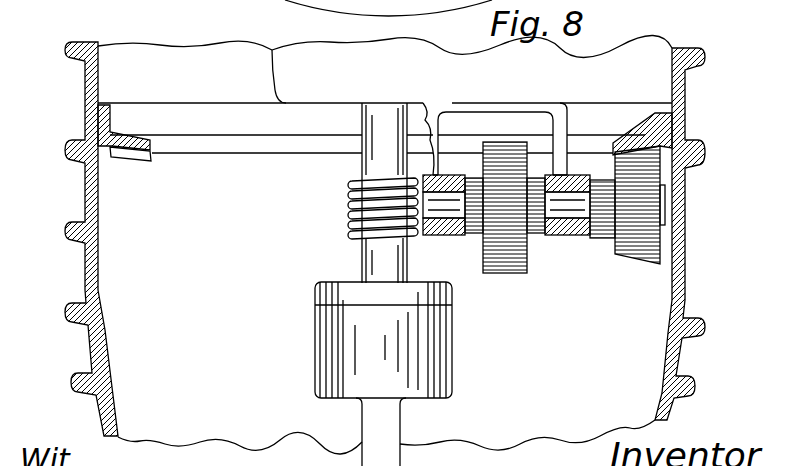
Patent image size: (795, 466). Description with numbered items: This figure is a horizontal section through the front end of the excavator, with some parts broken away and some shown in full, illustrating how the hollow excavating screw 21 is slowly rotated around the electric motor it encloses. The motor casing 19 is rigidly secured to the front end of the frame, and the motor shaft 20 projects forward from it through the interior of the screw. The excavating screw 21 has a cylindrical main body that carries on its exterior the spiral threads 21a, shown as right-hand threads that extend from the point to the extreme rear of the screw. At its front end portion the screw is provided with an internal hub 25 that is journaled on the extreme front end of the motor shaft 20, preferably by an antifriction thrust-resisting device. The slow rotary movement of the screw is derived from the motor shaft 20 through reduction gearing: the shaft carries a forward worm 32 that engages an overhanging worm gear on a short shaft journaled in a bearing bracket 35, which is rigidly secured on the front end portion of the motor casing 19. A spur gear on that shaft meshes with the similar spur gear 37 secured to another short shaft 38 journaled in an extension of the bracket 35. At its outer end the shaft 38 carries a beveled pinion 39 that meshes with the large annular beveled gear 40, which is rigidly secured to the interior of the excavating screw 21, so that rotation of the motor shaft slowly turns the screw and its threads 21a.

The motor casing 19 is at (295, 70).
The motor shaft 20 is at (377, 153).
The excavating screw 21 is at (722, 318).
The spiral threads 21a is at (77, 160).
The internal hub 25 is at (327, 340).
The forward worm 32 is at (360, 201).
The bearing bracket 35 is at (512, 100).
The spur gear 37 is at (507, 262).
The short shaft 38 is at (569, 237).
The beveled pinion 39 is at (643, 240).
The annular beveled gear 40 is at (638, 140).